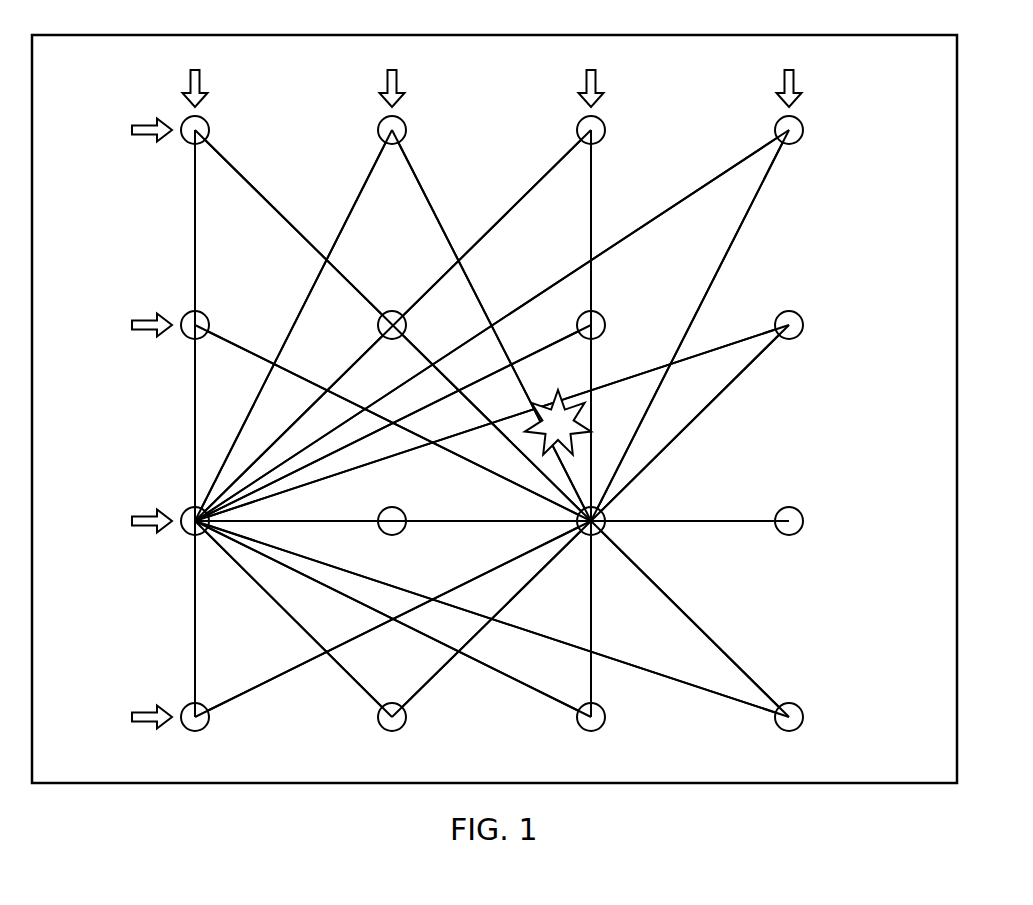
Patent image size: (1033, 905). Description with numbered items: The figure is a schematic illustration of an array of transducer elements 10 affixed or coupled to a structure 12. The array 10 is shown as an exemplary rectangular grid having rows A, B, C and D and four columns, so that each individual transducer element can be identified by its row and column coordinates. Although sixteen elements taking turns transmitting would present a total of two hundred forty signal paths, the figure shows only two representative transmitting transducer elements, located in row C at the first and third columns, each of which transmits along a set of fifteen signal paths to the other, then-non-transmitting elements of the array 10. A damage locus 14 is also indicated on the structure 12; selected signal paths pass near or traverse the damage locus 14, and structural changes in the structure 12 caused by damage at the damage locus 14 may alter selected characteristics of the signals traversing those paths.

The array of transducer elements 10 is at (835, 263).
The structure 12 is at (957, 500).
The damage locus 14 is at (560, 391).